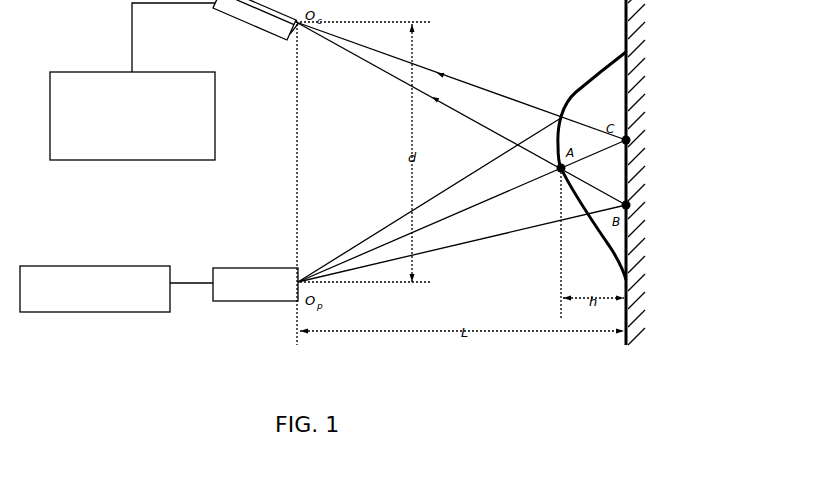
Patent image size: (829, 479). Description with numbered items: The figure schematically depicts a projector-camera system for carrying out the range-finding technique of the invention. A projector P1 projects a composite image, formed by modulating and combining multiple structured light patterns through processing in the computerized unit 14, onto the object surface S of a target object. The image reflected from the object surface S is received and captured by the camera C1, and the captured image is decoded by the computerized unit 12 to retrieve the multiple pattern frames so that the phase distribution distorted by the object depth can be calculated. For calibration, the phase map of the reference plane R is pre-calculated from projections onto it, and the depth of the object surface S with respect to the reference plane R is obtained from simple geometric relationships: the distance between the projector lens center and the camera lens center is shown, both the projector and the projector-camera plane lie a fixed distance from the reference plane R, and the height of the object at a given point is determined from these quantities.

The computerized unit 12 is at (140, 162).
The computerized unit 14 is at (140, 312).
The camera C1 is at (290, 45).
The projector P1 is at (283, 267).
The object surface S is at (624, 52).
The reference plane R is at (637, 383).